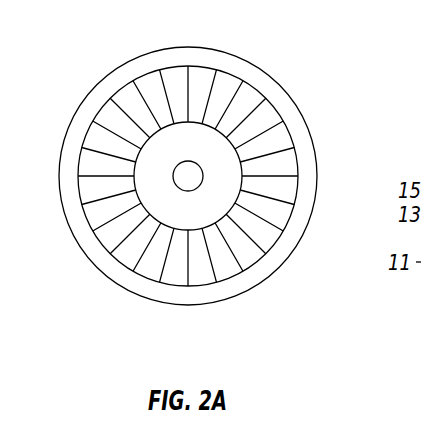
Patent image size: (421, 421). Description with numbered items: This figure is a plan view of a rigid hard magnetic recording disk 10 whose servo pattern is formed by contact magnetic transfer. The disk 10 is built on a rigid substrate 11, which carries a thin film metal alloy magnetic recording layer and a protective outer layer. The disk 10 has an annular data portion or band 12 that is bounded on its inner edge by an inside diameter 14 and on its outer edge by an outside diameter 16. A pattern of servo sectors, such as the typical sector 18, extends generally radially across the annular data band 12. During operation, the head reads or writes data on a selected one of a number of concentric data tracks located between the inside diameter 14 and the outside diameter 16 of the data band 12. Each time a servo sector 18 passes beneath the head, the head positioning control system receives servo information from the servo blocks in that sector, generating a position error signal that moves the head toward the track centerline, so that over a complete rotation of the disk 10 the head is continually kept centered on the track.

The magnetic recording disk 10 is at (115, 48).
The rigid substrate 11 is at (187, 48).
The annular data band 12 is at (290, 164).
The inside diameter 14 is at (167, 124).
The outside diameter 16 is at (262, 82).
The servo sector 18 is at (190, 273).